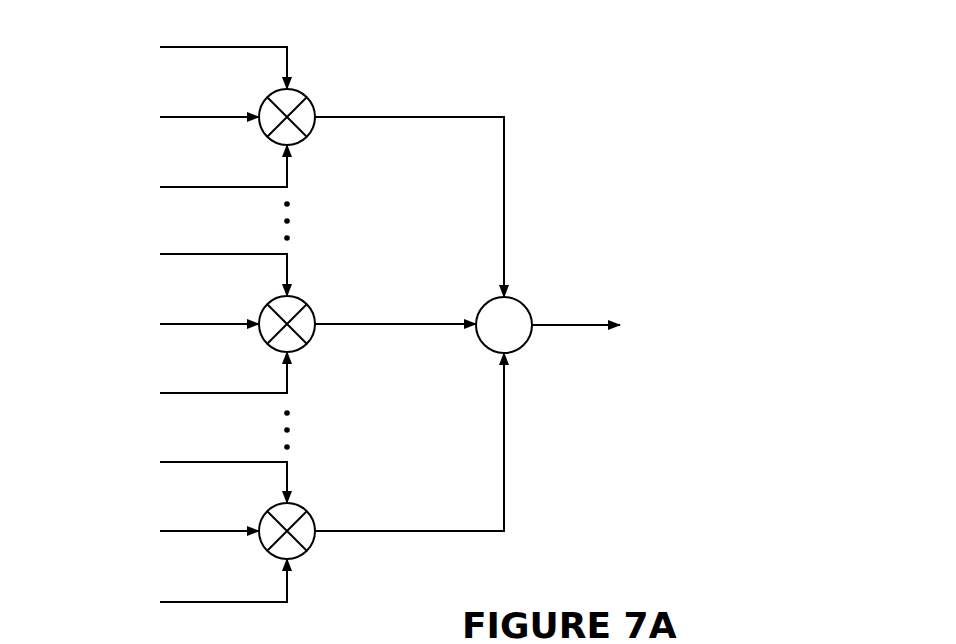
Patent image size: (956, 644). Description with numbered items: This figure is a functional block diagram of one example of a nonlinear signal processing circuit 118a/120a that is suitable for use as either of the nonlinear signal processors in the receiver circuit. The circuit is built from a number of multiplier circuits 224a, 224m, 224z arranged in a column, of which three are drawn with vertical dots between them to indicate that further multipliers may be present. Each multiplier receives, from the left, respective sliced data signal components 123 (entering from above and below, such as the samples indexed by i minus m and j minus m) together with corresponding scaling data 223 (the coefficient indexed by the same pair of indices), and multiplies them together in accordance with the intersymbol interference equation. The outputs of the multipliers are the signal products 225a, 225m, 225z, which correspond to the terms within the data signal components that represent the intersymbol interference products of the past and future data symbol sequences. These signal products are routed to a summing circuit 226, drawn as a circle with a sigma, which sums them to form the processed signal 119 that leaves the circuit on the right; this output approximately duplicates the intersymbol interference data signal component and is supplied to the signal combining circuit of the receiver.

The nonlinear signal processing circuit 118a is at (598, 50).
The nonlinear signal processing circuit 120a is at (341, 307).
The sliced signal 123 is at (210, 45).
The scaling data 223 is at (215, 115).
The multiplier circuit 224a is at (306, 138).
The multiplier circuit 224m is at (306, 345).
The multiplier circuit 224z is at (306, 552).
The signal product 225a is at (434, 116).
The signal product 225m is at (437, 322).
The signal product 225z is at (437, 530).
The summing circuit 226 is at (524, 344).
The processed signal 119 is at (588, 299).